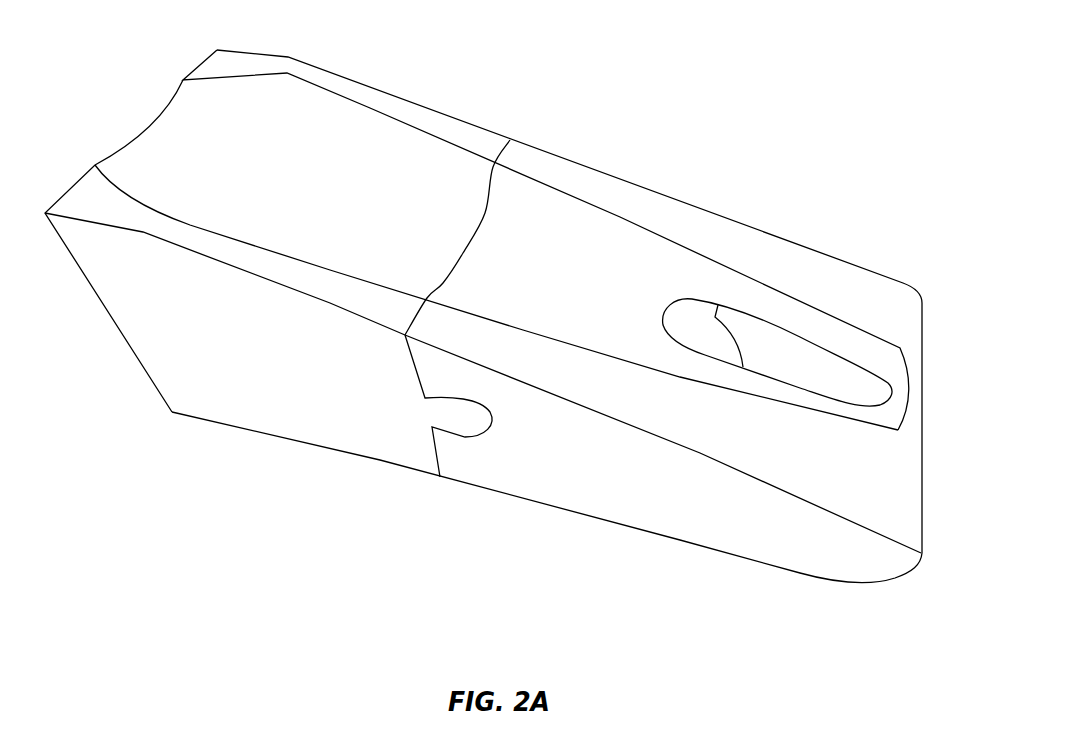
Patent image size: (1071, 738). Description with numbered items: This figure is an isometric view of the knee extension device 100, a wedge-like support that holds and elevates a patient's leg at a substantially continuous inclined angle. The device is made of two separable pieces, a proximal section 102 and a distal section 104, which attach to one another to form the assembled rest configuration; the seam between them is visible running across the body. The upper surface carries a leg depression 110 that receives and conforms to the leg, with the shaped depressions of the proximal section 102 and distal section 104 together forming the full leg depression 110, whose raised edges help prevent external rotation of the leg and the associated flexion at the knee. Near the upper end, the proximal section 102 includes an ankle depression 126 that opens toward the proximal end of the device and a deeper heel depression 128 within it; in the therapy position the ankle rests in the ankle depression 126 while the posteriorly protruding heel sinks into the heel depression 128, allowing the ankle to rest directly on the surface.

The knee extension device 100 is at (482, 296).
The proximal section 102 is at (632, 500).
The distal section 104 is at (290, 378).
The leg depression 110 is at (415, 157).
The ankle depression 126 is at (810, 367).
The heel depression 128 is at (700, 337).